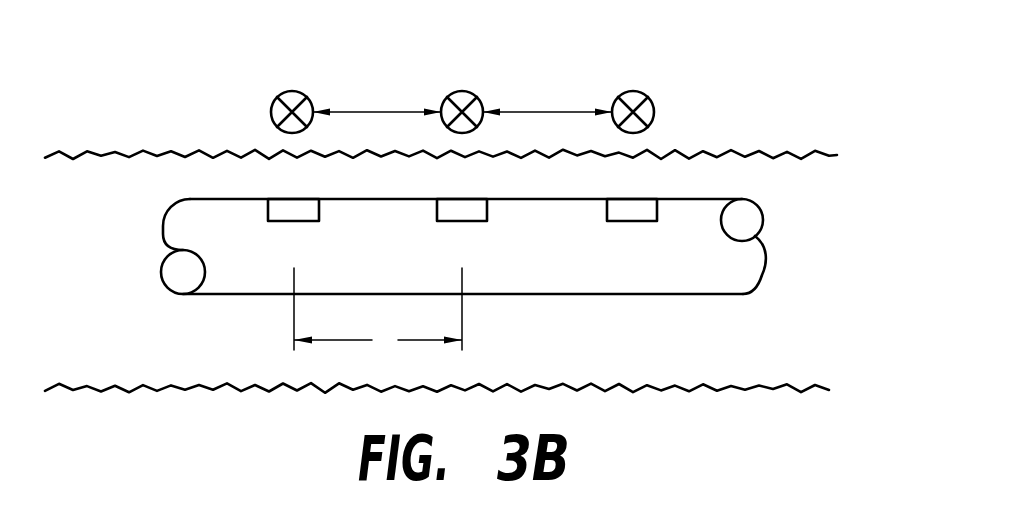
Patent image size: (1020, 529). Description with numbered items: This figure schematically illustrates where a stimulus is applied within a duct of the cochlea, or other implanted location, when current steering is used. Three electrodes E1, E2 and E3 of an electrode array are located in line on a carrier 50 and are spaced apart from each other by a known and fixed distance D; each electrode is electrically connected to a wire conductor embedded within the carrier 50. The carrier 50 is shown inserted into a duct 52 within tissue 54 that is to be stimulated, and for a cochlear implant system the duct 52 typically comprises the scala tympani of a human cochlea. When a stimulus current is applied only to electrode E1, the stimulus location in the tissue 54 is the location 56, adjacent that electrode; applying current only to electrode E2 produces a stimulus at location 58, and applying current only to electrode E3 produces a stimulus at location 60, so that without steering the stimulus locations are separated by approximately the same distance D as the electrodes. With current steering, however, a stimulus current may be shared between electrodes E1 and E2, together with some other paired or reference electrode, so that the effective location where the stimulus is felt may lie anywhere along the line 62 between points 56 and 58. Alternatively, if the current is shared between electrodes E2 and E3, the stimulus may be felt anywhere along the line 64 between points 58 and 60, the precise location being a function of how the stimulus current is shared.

The carrier 50 is at (463, 287).
The duct 52 is at (100, 381).
The tissue 54 is at (150, 129).
The stimulus location 56 is at (290, 91).
The stimulus location 58 is at (462, 91).
The stimulus location 60 is at (633, 91).
The line 62 is at (372, 112).
The line 64 is at (545, 112).
The electrode E1 is at (293, 227).
The electrode E2 is at (462, 227).
The electrode E3 is at (632, 227).
The distance D is at (378, 311).